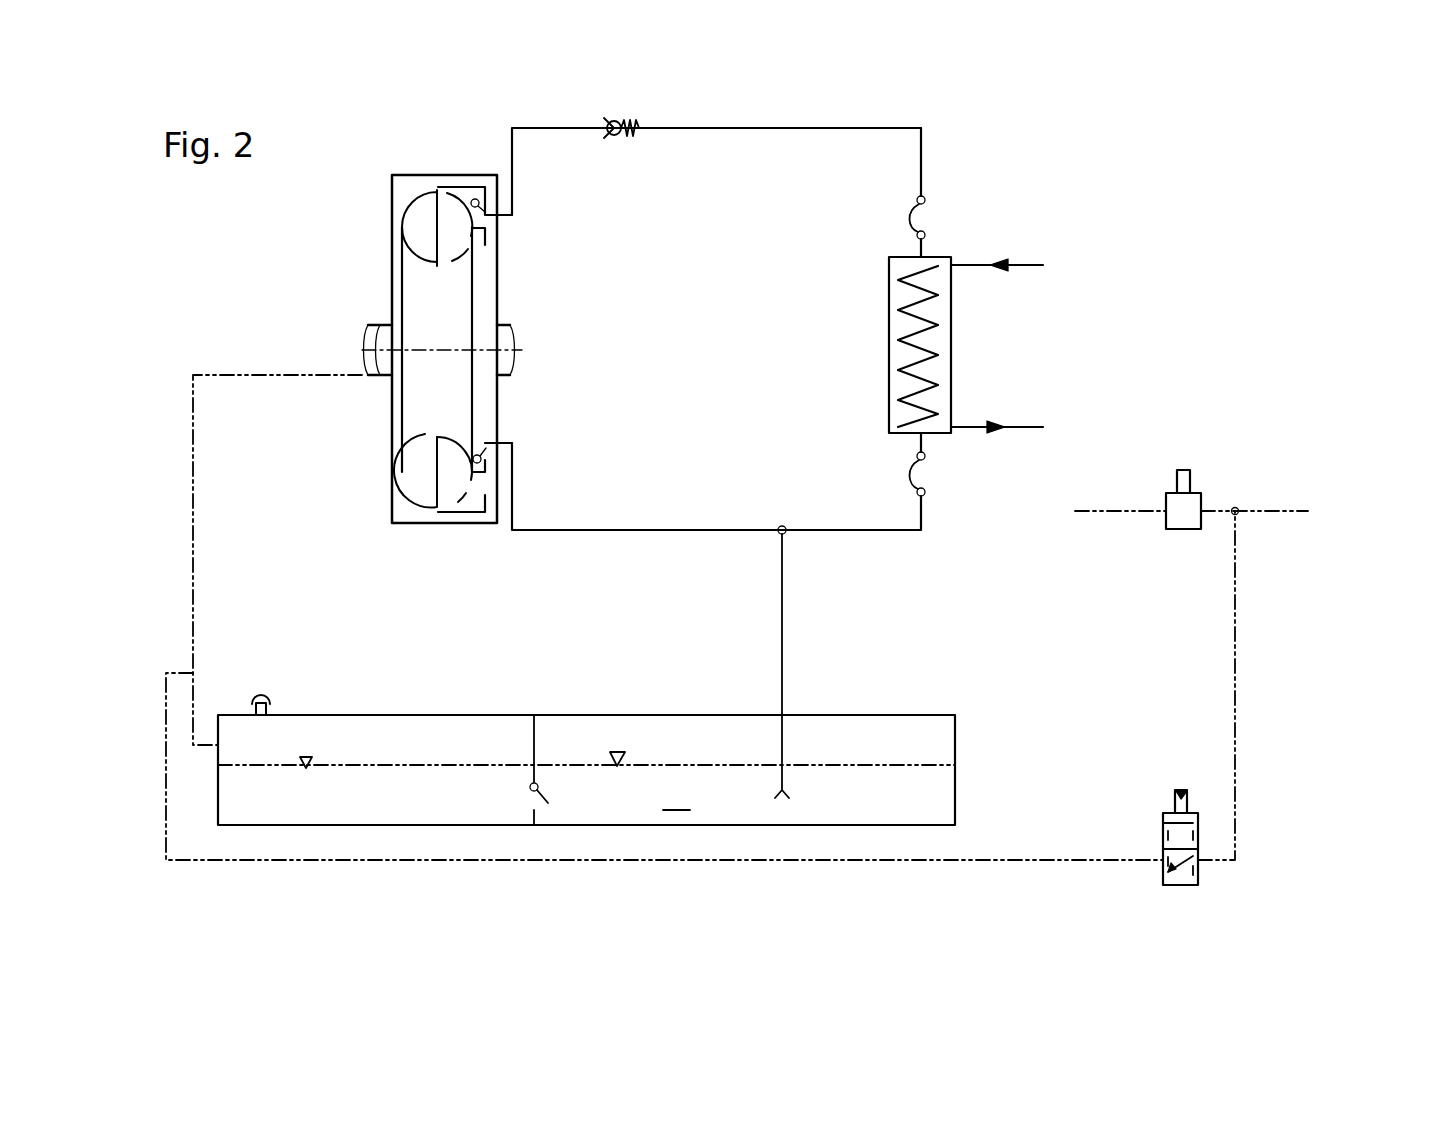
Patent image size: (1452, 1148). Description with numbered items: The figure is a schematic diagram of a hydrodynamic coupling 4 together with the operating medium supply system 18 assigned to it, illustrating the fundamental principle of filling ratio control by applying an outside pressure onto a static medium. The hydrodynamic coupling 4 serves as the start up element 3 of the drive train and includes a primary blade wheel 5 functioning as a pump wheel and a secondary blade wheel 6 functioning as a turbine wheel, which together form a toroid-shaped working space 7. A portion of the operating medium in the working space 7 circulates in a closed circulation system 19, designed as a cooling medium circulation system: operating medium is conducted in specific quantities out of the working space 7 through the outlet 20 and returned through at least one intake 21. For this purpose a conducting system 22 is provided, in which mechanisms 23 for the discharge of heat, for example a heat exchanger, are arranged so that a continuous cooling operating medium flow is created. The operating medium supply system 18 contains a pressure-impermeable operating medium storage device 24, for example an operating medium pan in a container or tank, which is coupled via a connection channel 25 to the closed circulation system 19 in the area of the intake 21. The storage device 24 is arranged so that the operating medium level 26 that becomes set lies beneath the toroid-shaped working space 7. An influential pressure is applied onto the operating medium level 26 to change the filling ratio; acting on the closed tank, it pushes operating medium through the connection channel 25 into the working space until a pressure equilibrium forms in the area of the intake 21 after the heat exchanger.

The start up element 3 is at (468, 327).
The hydrodynamic coupling 4 is at (451, 175).
The primary blade wheel 5 is at (416, 215).
The secondary blade wheel 6 is at (451, 497).
The toroid-shaped working space 7 is at (446, 472).
The operating medium supply system 18 is at (430, 836).
The closed circulation system 19 is at (716, 128).
The outlet 20 is at (479, 198).
The intake 21 is at (481, 455).
The conducting system 22 is at (921, 165).
The mechanisms for the discharge of heat 23 is at (968, 360).
The operating medium storage device 24 is at (586, 760).
The connection channel 25 is at (782, 630).
The operating medium level 26 is at (618, 750).